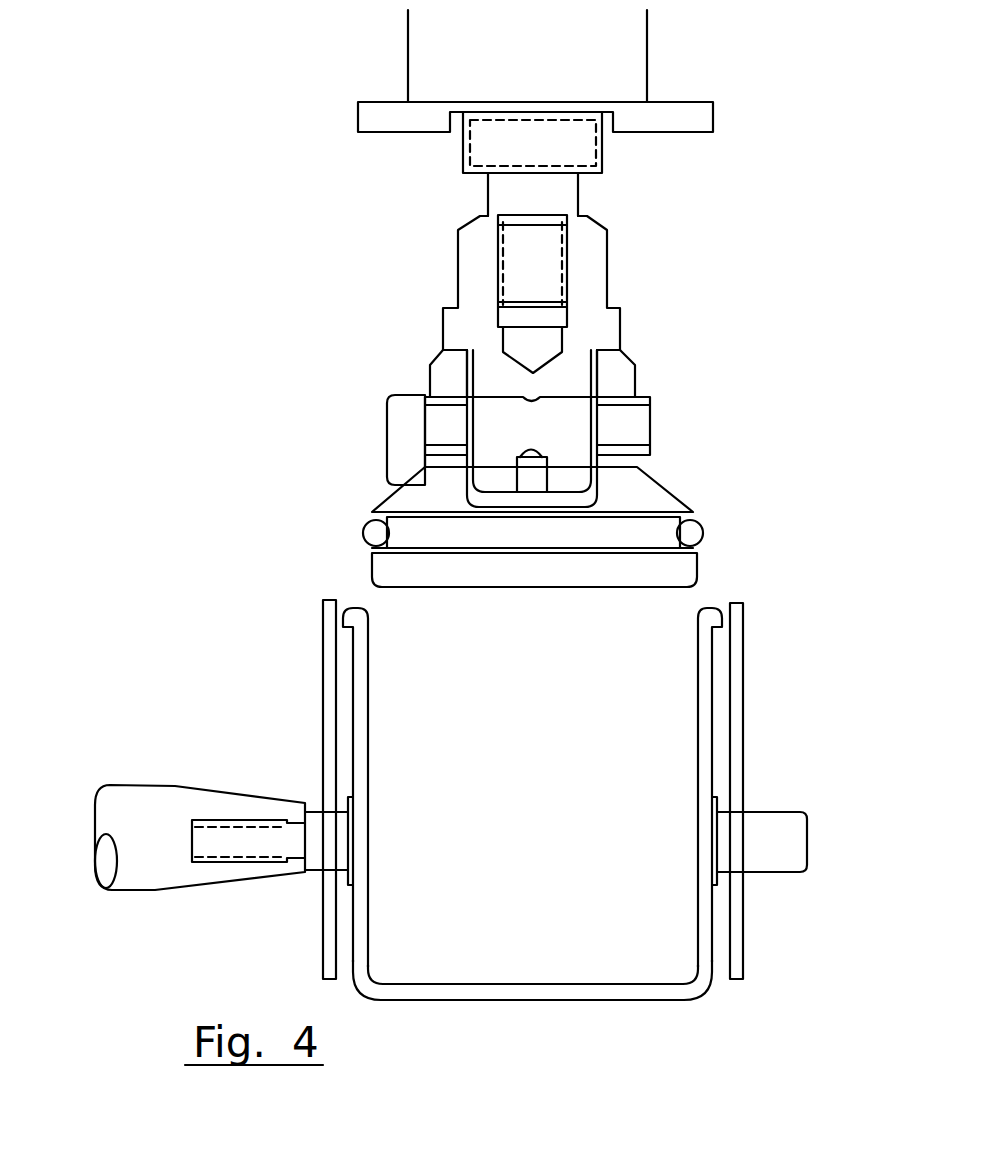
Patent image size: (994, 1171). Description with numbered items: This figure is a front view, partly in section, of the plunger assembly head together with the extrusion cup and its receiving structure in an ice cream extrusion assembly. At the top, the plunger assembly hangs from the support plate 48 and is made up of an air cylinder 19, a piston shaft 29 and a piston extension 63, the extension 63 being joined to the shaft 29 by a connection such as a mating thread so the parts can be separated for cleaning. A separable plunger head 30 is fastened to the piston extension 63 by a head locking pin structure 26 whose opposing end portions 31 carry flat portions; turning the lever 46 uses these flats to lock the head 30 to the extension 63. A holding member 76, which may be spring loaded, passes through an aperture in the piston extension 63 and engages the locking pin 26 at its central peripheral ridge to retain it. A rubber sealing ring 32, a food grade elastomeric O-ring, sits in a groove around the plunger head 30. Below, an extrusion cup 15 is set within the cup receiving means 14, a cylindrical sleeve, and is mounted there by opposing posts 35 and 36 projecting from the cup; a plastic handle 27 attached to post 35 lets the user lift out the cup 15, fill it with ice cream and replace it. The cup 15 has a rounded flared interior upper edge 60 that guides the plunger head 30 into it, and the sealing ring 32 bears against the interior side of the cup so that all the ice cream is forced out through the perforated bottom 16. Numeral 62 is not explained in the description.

The air cylinder 19 is at (600, 59).
The support plate 48 is at (680, 122).
The piston shaft 29 is at (552, 200).
The piston extension 63 is at (590, 285).
The head locking pin structure 26 is at (405, 377).
The end portions 31 is at (650, 428).
The lever 46 is at (398, 443).
The holding member 76 is at (537, 478).
The plunger head 30 is at (412, 520).
The sealing ring 32 is at (703, 533).
The cup receiving means 14 is at (326, 635).
The rounded flared interior upper edge 60 is at (705, 630).
The extrusion cup 15 is at (367, 738).
The perforated bottom 16 is at (588, 992).
The handle 27 is at (163, 830).
The post 35 is at (315, 828).
The post 36 is at (778, 832).
The threaded insert 62 is at (272, 842).